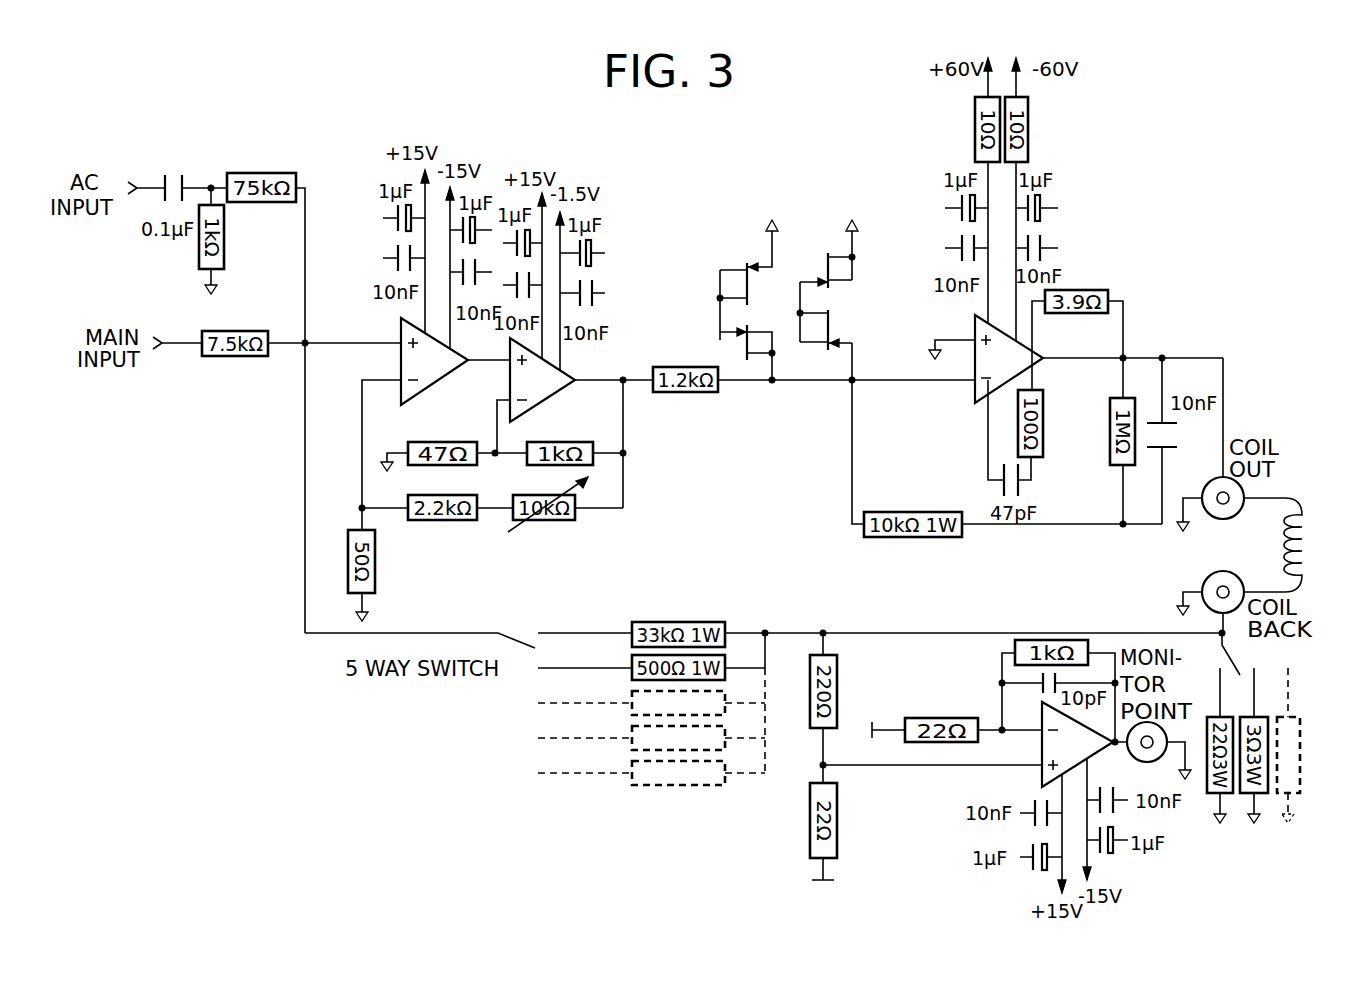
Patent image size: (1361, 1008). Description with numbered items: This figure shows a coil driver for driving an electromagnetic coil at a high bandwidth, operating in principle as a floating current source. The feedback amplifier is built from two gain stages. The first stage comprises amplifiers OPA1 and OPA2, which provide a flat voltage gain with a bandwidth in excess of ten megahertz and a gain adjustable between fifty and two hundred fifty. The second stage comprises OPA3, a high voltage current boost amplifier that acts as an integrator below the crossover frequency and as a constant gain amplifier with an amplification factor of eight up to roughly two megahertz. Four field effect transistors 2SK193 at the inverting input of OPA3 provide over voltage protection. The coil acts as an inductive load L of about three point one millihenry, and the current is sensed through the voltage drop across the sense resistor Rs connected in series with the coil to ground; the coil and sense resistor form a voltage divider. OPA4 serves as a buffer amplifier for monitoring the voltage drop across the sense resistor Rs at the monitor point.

The amplifier OPA1 is at (437, 369).
The amplifier OPA2 is at (556, 381).
The high voltage current boost amplifier OPA3 is at (975, 361).
The buffer amplifier OPA4 is at (1044, 748).
The field effect transistors 2SK193 is at (788, 268).
The coil inductance L is at (1285, 545).
The current sense resistor Rs is at (1304, 745).